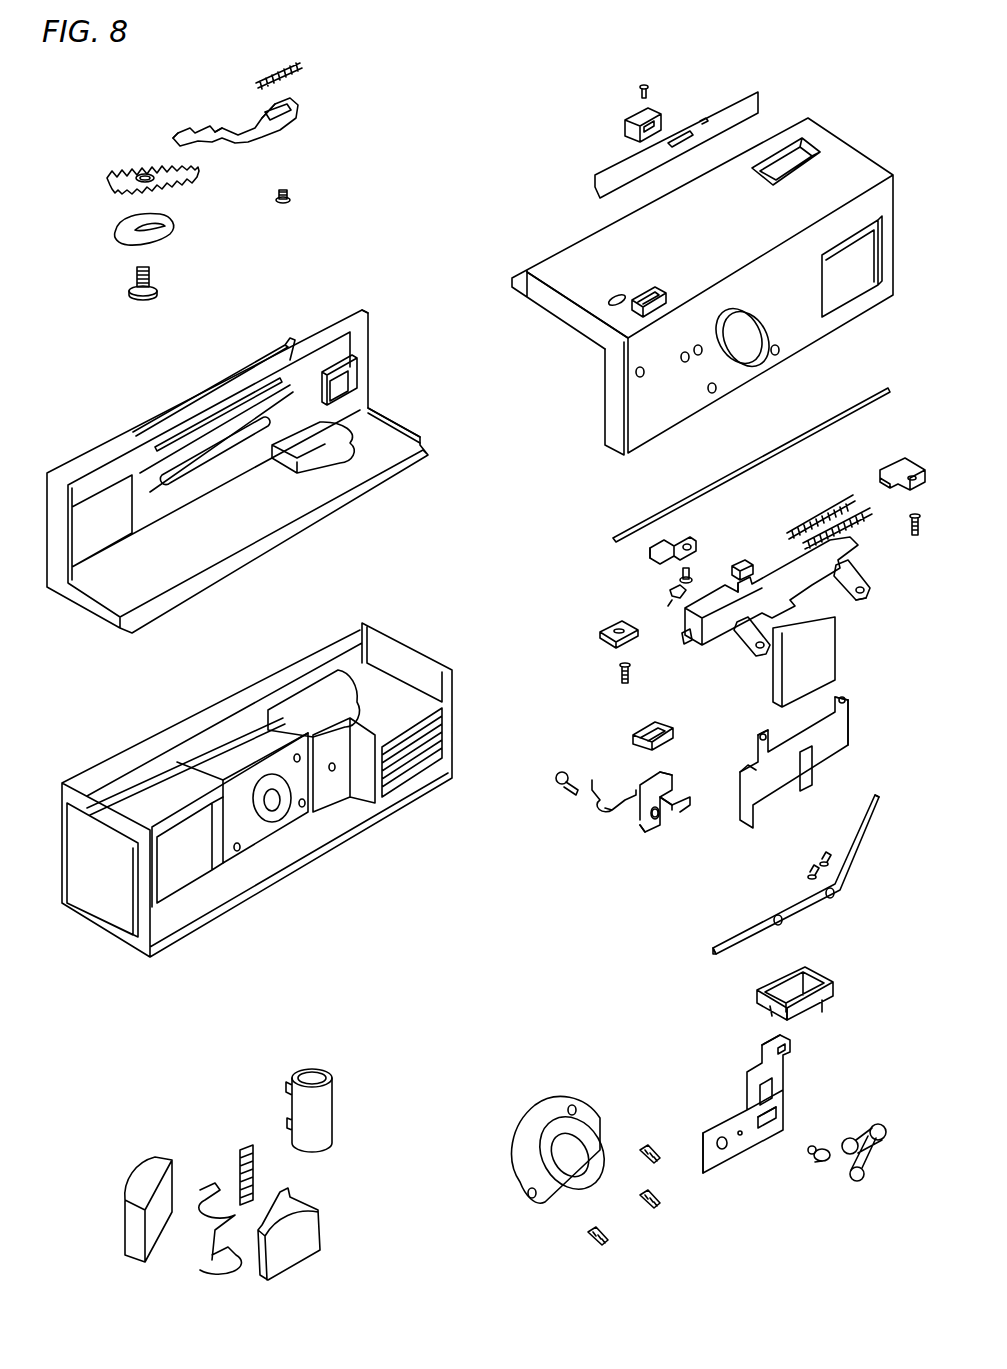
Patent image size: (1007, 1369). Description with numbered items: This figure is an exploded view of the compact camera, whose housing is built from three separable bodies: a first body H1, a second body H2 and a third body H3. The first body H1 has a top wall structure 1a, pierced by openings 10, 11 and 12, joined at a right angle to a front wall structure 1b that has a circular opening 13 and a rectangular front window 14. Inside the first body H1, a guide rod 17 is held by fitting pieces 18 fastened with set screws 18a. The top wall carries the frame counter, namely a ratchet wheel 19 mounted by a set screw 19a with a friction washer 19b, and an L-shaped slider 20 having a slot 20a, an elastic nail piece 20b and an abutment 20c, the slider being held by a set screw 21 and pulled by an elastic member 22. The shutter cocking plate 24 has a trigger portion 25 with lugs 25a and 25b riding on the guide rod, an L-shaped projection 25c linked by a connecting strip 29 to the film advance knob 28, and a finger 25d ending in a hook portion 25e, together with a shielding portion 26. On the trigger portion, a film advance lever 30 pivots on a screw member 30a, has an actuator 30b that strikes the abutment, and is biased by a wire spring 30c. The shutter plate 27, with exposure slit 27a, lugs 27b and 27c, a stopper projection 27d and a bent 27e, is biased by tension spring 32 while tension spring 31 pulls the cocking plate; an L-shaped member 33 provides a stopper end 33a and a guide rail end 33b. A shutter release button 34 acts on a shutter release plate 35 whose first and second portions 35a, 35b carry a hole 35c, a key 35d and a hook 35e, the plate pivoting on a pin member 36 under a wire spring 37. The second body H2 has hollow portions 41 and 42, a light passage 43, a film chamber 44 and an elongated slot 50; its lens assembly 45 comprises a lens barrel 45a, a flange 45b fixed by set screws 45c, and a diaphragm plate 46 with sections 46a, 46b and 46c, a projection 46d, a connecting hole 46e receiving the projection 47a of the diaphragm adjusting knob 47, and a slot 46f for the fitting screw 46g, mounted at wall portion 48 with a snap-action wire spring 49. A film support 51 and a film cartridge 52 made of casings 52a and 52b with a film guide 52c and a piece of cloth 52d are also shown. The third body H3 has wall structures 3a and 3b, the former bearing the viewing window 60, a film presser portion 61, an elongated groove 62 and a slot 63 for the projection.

The first body H1 is at (822, 126).
The wall structure 1a is at (556, 270).
The wall structure 1b is at (615, 393).
The opening 10 is at (660, 302).
The opening 11 is at (612, 303).
The opening 12 is at (792, 148).
The circular opening 13 is at (738, 364).
The front window 14 is at (880, 242).
The guide rod 17 is at (878, 394).
The fitting piece 18 is at (902, 466).
The set screw 18a is at (920, 514).
The ratchet wheel 19 is at (180, 180).
The set screw 19a is at (157, 285).
The washer 19b is at (172, 230).
The slider 20 is at (290, 122).
The slot 20a is at (292, 106).
The elastic nail piece 20b is at (180, 132).
The abutment 20c is at (232, 130).
The set screw 21 is at (288, 193).
The elastic member 22 is at (272, 76).
The shutter cocking plate 24 is at (866, 600).
The trigger portion 25 is at (778, 606).
The lug 25a is at (756, 652).
The lug 25b is at (860, 582).
The projection 25c is at (742, 562).
The finger 25d is at (727, 628).
The hook portion 25e is at (682, 635).
The shielding portion 26 is at (812, 650).
The shutter plate 27 is at (848, 754).
The exposure slit 27a is at (812, 778).
The lug 27b is at (756, 748).
The lug 27c is at (848, 693).
The stopper projection 27d is at (850, 722).
The bent 27e is at (750, 800).
The film advance knob 28 is at (628, 118).
The connecting strip 29 is at (722, 122).
The film advance lever 30 is at (684, 545).
The screw member 30a is at (711, 564).
The actuator 30b is at (652, 553).
The wire spring 30c is at (670, 591).
The tension spring 31 is at (837, 533).
The tension spring 32 is at (818, 518).
The L-shaped member 33 is at (812, 895).
The end portion 33a is at (874, 832).
The end portion 33b is at (718, 956).
The shutter release button 34 is at (646, 724).
The shutter release plate 35 is at (648, 822).
The first portion 35a is at (664, 778).
The second portion 35b is at (668, 830).
The hole 35c is at (655, 845).
The key 35d is at (672, 792).
The hook 35e is at (682, 830).
The pin member 36 is at (561, 790).
The wire spring 37 is at (600, 812).
The second body H2 is at (400, 643).
The hollow portion 41 is at (185, 880).
The hollow portion 42 is at (408, 778).
The light passage 43 is at (272, 815).
The film chamber 44 is at (318, 700).
The lens assembly 45 is at (576, 1094).
The lens barrel 45a is at (580, 1118).
The flange 45b is at (536, 1200).
The set screw 45c is at (655, 1152).
The diaphragm plate 46 is at (775, 1140).
The first section 46a is at (730, 1150).
The second section 46b is at (775, 1097).
The third section 46c is at (792, 1052).
The projection 46d is at (778, 1112).
The connecting hole 46e is at (784, 1040).
The slot 46f is at (760, 1135).
The fitting screw 46g is at (823, 1165).
The diaphragm adjusting knob 47 is at (830, 985).
The projection 47a is at (790, 1024).
The wall portion 48 is at (332, 793).
The wire spring 49 is at (875, 1160).
The elongated slot 50 is at (235, 745).
The film support 51 is at (314, 1070).
The film cartridge 52 is at (225, 1142).
The casing 52a is at (145, 1180).
The casing 52b is at (302, 1275).
The film guide 52c is at (205, 1258).
The piece of cloth 52d is at (258, 1172).
The third body H3 is at (355, 312).
The wall structure 3a is at (368, 352).
The wall structure 3b is at (395, 430).
The viewing window 60 is at (345, 387).
The projected portion 61 is at (150, 492).
The elongated groove 62 is at (220, 440).
The slot 63 is at (172, 445).